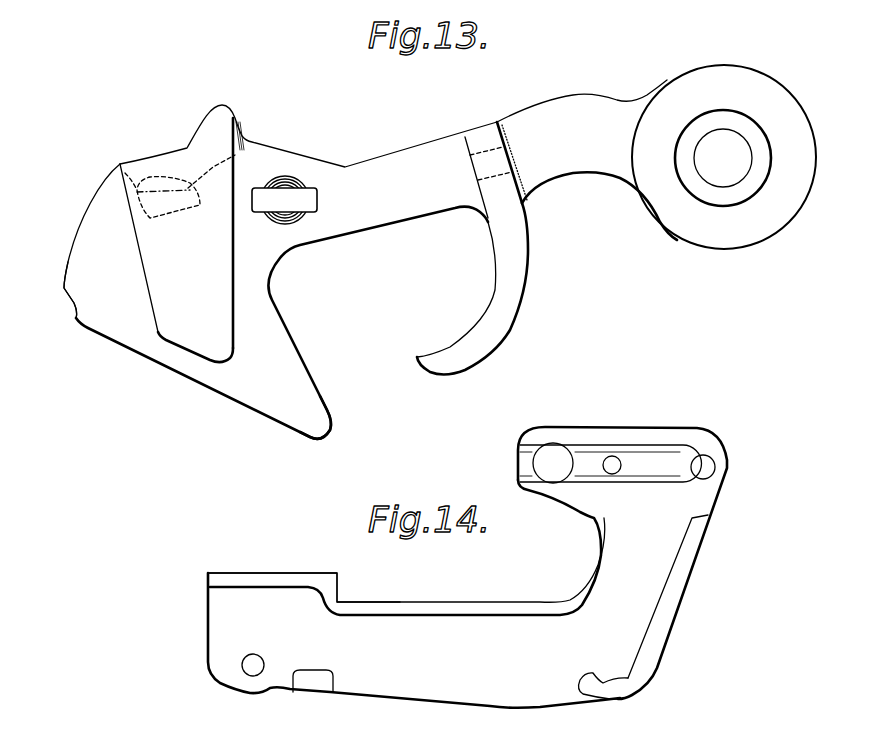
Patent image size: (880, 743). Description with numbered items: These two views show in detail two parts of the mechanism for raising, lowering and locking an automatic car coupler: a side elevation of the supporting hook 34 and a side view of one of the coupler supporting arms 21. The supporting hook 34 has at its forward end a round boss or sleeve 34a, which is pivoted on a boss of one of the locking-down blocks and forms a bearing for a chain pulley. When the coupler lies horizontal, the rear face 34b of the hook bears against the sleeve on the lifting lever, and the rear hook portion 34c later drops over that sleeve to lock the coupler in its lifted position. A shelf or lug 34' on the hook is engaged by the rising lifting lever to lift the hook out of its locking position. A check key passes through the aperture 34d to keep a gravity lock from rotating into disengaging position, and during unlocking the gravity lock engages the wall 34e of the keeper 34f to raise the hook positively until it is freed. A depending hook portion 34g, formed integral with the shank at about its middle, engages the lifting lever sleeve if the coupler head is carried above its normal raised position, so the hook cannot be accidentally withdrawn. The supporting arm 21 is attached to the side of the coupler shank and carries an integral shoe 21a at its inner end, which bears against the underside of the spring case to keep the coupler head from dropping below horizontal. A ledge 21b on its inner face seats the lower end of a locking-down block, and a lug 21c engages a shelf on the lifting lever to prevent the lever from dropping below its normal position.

In FIG. 13, the supporting hook 34 is at (438, 252).
In FIG. 13, the shelf or lug 34' is at (162, 177).
In FIG. 13, the sleeve 34a is at (735, 196).
In FIG. 13, the rear face 34b is at (73, 322).
In FIG. 13, the hook portion 34c is at (320, 418).
In FIG. 13, the aperture 34d is at (488, 170).
In FIG. 13, the wall 34e is at (213, 168).
In FIG. 13, the keeper 34f is at (176, 263).
In FIG. 13, the depending hook portion 34g is at (490, 330).
In FIG. 14, the coupler supporting arm 21 is at (467, 577).
In FIG. 14, the shoe 21a is at (275, 581).
In FIG. 14, the ledge 21b is at (629, 680).
In FIG. 14, the lug 21c is at (320, 685).